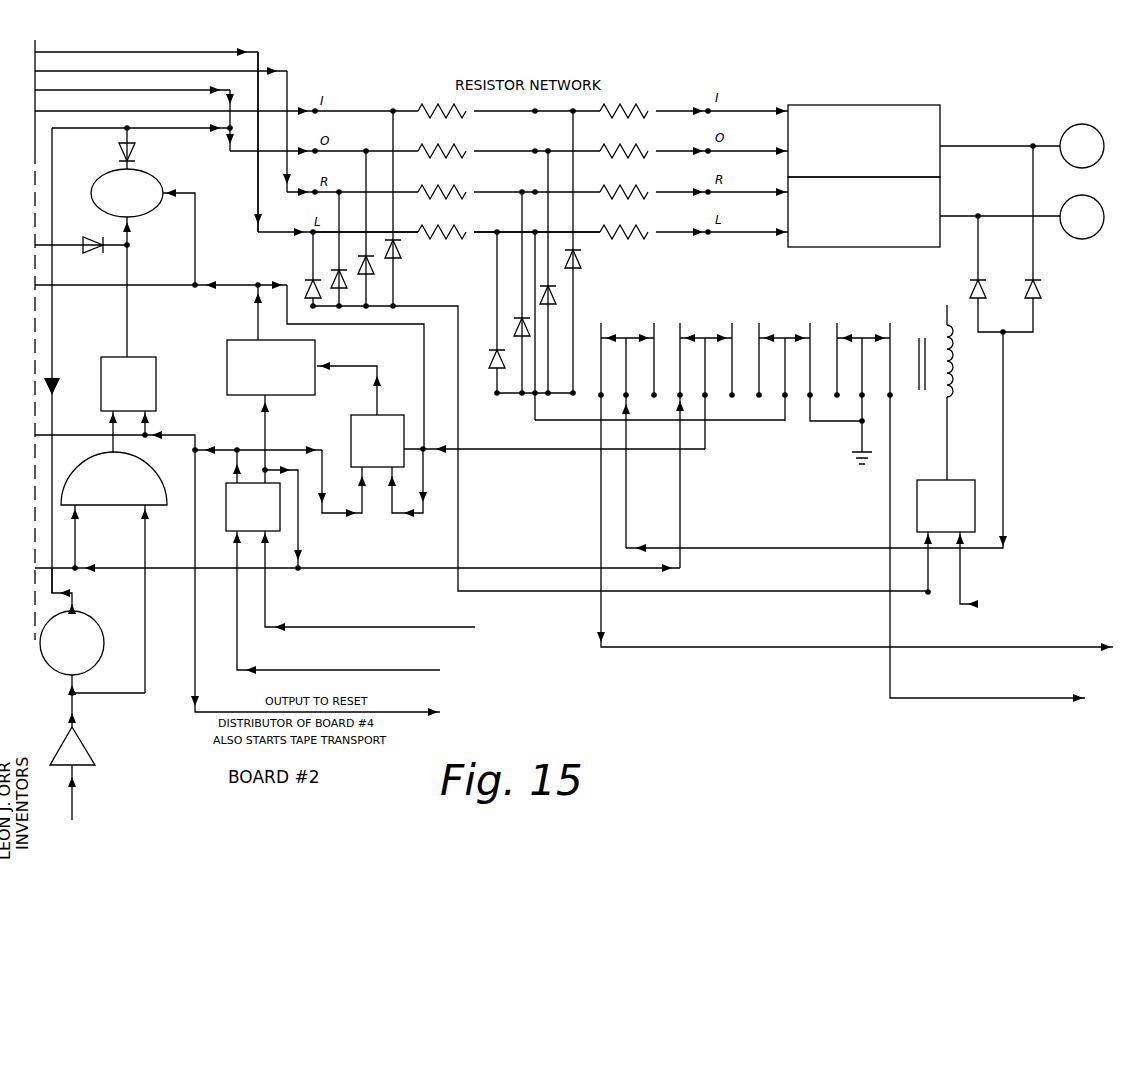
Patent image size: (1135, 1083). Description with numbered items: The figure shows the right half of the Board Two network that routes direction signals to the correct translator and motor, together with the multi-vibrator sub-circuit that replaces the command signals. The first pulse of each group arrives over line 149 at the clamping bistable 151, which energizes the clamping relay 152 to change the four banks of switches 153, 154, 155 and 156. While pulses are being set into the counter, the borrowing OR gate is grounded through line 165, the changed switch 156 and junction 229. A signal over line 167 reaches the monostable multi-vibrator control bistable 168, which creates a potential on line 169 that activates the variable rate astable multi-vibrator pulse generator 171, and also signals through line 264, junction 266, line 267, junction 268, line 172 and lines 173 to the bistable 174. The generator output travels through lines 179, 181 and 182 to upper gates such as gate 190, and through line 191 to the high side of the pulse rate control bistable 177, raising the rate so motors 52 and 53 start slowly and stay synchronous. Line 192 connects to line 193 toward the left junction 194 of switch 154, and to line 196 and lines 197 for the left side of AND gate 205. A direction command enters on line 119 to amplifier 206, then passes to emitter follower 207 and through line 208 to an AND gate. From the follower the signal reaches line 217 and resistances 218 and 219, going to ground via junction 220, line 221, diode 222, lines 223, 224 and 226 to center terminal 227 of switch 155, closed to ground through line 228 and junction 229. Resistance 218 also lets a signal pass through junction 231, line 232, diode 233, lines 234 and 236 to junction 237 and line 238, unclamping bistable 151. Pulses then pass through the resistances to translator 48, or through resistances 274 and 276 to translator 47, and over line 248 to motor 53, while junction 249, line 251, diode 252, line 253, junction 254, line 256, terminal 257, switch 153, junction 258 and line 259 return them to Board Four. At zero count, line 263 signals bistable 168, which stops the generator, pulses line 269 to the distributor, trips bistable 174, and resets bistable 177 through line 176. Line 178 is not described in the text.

The translator 47 is at (895, 106).
The translator 48 is at (848, 248).
The stepping synchronous motor 52 is at (1068, 126).
The stepping synchronous motor 53 is at (1095, 196).
The line 119 is at (78, 806).
The line 149 is at (1013, 612).
The clamping bistable 151 is at (948, 470).
The clamping relay 152 is at (955, 382).
The switch 153 is at (638, 324).
The switch 154 is at (710, 324).
The switch 155 is at (796, 324).
The switch 156 is at (871, 324).
The line 165 is at (890, 678).
The line 167 is at (272, 602).
The monostable multi-vibrator control bistable 168 is at (226, 520).
The line 169 is at (267, 418).
The variable rate astable multi-vibrator pulse generator 171 is at (227, 364).
The line 172 is at (193, 450).
The lines 173 is at (150, 420).
The bistable 174 is at (101, 357).
The line 176 is at (336, 428).
The pulse rate control bistable 177 is at (351, 418).
The connection line 178 is at (356, 366).
The line 179 is at (256, 320).
The line 181 is at (222, 288).
The line 182 is at (195, 256).
The upper gate 190 is at (156, 172).
The line 191 is at (256, 282).
The line 192 is at (320, 545).
The line 193 is at (428, 568).
The left junction 194 is at (682, 398).
The line 196 is at (156, 572).
The lines 197 is at (78, 548).
The direction AND gate 205 is at (80, 467).
The amplifier 206 is at (92, 758).
The emitter follower 207 is at (100, 620).
The line 208 is at (125, 695).
The line 217 is at (256, 190).
The resistance 218 is at (468, 231).
The resistance 219 is at (652, 231).
The junction 220 is at (495, 235).
The line 221 is at (495, 300).
The diode 222 is at (493, 356).
The line 223 is at (498, 396).
The line 224 is at (533, 410).
The line 226 is at (533, 422).
The center terminal 227 is at (783, 397).
The line 228 is at (827, 423).
The junction 229 is at (858, 460).
The junction 231 is at (310, 232).
The line 232 is at (311, 262).
The diode 233 is at (305, 284).
The line 234 is at (308, 302).
The line 236 is at (407, 305).
The junction 237 is at (928, 594).
The line 238 is at (926, 578).
The line 248 is at (950, 207).
The junction 249 is at (976, 219).
The line 251 is at (980, 258).
The diode 252 is at (1035, 278).
The line 253 is at (987, 330).
The junction 254 is at (1006, 335).
The line 256 is at (1005, 426).
The terminal 257 is at (628, 398).
The junction 258 is at (599, 397).
The line 259 is at (599, 503).
The line 263 is at (234, 632).
The line 264 is at (268, 450).
The junction 266 is at (238, 448).
The line 267 is at (236, 462).
The junction 268 is at (197, 446).
The line 269 is at (193, 520).
The resistance 274 is at (468, 150).
The resistance 276 is at (652, 150).